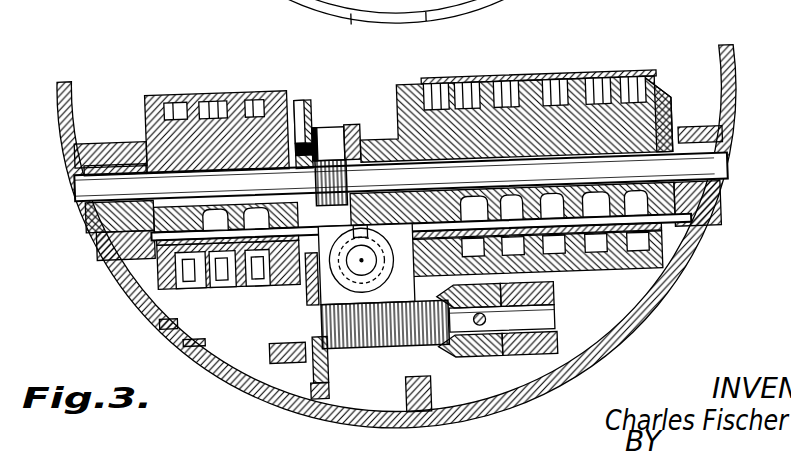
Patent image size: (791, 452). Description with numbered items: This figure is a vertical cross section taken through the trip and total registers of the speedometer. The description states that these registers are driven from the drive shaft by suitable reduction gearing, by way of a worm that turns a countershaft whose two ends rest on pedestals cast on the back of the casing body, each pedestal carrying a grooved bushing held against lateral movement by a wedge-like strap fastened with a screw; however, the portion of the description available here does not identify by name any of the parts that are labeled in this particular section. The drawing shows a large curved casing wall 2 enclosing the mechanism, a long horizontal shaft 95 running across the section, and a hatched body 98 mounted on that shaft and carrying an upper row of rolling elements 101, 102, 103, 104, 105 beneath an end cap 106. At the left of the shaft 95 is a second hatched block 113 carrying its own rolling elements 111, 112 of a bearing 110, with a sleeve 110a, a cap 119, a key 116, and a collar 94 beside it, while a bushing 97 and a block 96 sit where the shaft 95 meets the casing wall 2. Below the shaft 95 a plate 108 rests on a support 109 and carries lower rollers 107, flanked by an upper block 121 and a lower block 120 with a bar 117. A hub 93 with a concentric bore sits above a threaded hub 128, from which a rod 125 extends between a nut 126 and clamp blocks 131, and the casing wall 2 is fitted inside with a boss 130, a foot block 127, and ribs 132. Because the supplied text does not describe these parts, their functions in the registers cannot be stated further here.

The housing 2 is at (648, 325).
The worm wheel hub 93 is at (381, 272).
The collar 94 is at (360, 140).
The shaft 95 is at (706, 175).
The bearing block 96 is at (700, 143).
The bushing 97 is at (97, 155).
The drum body 98 is at (596, 130).
The bearing race 101 is at (600, 130).
The bearing roller 102 is at (560, 84).
The bearing roller 103 is at (510, 84).
The bearing roller 104 is at (472, 84).
The bearing roller 105 is at (432, 84).
The end cap 106 is at (647, 84).
The lower bearing rollers 107 is at (628, 270).
The support plate 108 is at (690, 235).
The plate support 109 is at (690, 233).
The bearing 110 is at (258, 85).
The bearing sleeve 110a is at (350, 125).
The bearing roller 111 is at (228, 88).
The bearing roller 112 is at (196, 87).
The bearing housing block 113 is at (190, 128).
The key 116 is at (322, 158).
The support bar 117 is at (258, 290).
The cap 119 is at (302, 135).
The lower bearing block 120 is at (238, 278).
The upper bearing block 121 is at (160, 240).
The rod 125 is at (545, 322).
The nut 126 is at (456, 360).
The foot block 127 is at (300, 378).
The threaded hub 128 is at (341, 350).
The boss 130 is at (262, 393).
The clamp block 131 is at (545, 396).
The rib 132 is at (157, 318).